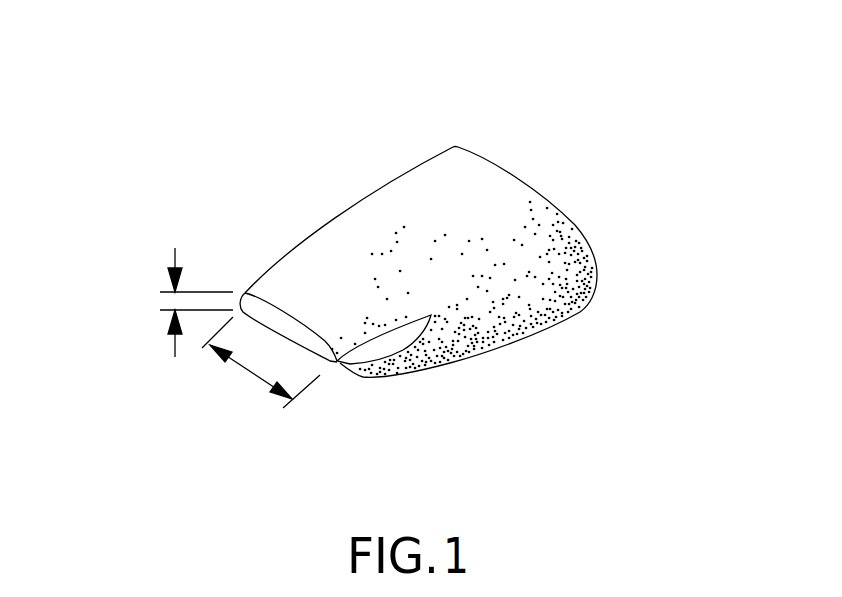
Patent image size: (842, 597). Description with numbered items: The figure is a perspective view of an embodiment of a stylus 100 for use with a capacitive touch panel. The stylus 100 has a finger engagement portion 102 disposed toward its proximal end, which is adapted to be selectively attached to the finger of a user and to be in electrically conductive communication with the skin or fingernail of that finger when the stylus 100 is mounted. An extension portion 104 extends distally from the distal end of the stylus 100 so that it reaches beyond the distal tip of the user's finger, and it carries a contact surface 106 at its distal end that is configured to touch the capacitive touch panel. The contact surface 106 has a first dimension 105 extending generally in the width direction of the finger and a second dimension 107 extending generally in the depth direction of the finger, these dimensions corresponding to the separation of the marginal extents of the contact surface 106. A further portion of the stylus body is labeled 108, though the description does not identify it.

The stylus 100 is at (548, 90).
The finger engagement portion 102 is at (600, 324).
The extension portion 104 is at (252, 280).
The first dimension 105 is at (243, 367).
The contact surface 106 is at (288, 322).
The second dimension 107 is at (175, 263).
The top surface 108 is at (385, 202).